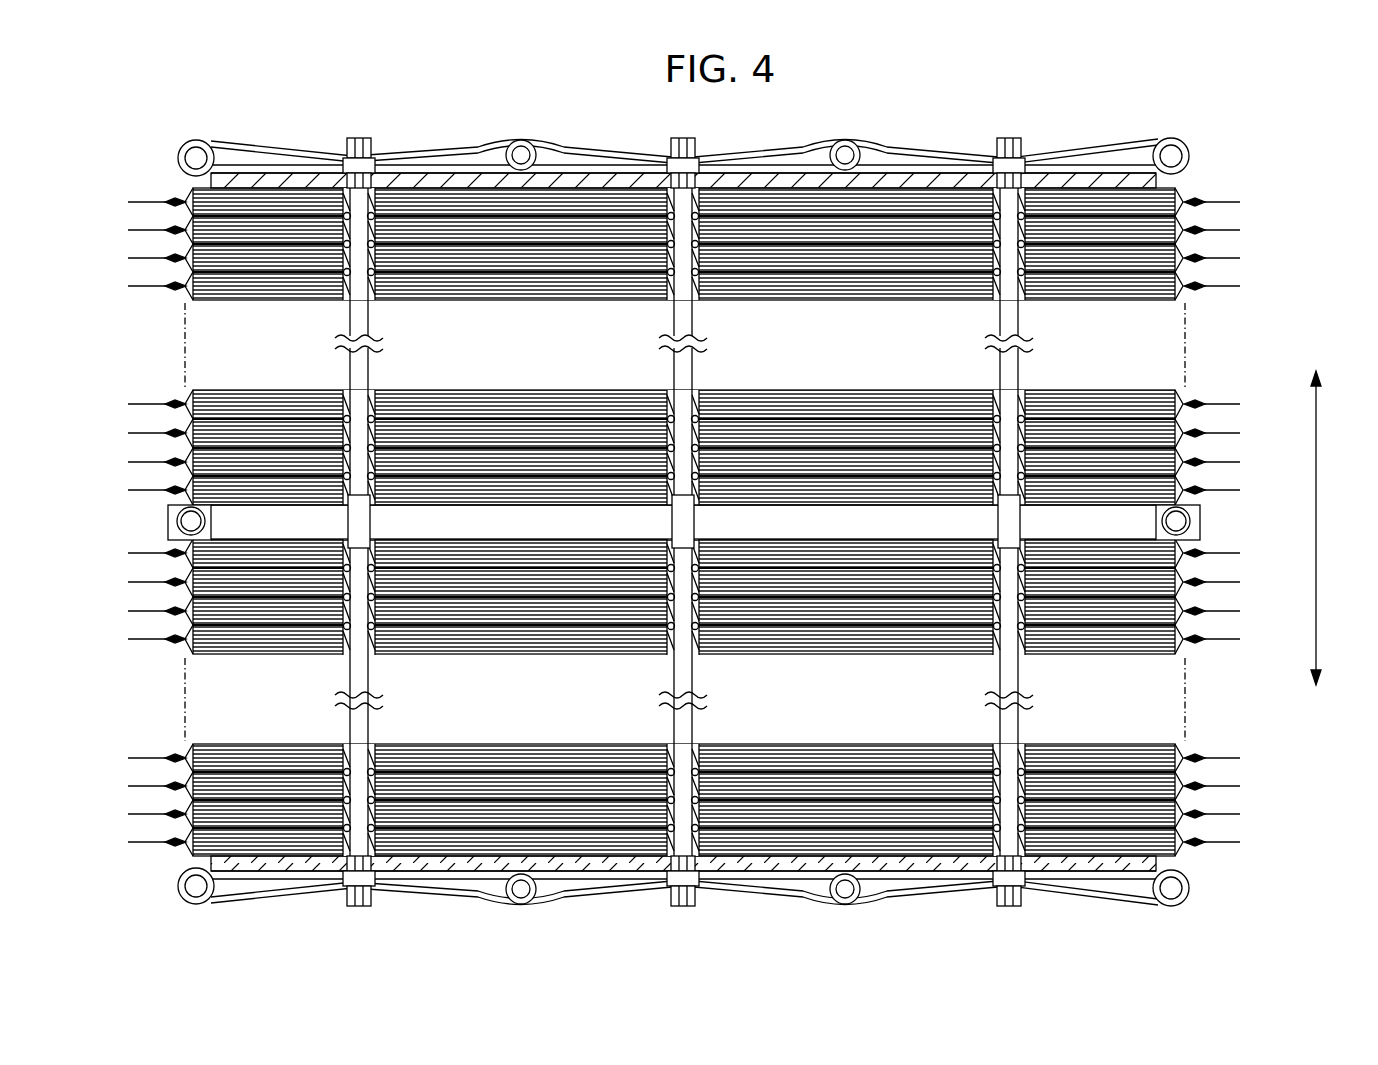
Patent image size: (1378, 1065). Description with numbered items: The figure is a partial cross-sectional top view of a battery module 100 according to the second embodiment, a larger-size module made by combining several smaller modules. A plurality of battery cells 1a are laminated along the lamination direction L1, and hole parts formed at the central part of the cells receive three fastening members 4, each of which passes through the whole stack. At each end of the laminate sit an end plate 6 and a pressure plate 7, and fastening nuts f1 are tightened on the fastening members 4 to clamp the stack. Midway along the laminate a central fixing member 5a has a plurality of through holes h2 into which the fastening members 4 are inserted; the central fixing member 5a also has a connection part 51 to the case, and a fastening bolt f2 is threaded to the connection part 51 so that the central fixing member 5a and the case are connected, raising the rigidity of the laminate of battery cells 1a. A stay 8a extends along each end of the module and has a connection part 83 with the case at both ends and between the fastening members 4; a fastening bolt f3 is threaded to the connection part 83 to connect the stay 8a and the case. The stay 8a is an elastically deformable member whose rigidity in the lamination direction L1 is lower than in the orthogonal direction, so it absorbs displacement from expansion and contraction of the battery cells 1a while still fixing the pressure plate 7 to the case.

The battery module 100 is at (1193, 105).
The battery cell 1a is at (1250, 191).
The fastening member 4 is at (365, 178).
The through hole h2 is at (323, 512).
The connection part 51 is at (160, 508).
The fastening bolt f2 is at (178, 517).
The central fixing member 5a is at (325, 514).
The lamination direction L1 is at (1312, 512).
The fastening bolt f3 is at (185, 867).
The connection part 83 is at (180, 884).
The stay 8a is at (233, 882).
The end plate 6 is at (255, 857).
The fastening nut f1 is at (338, 892).
The pressure plate 7 is at (390, 873).